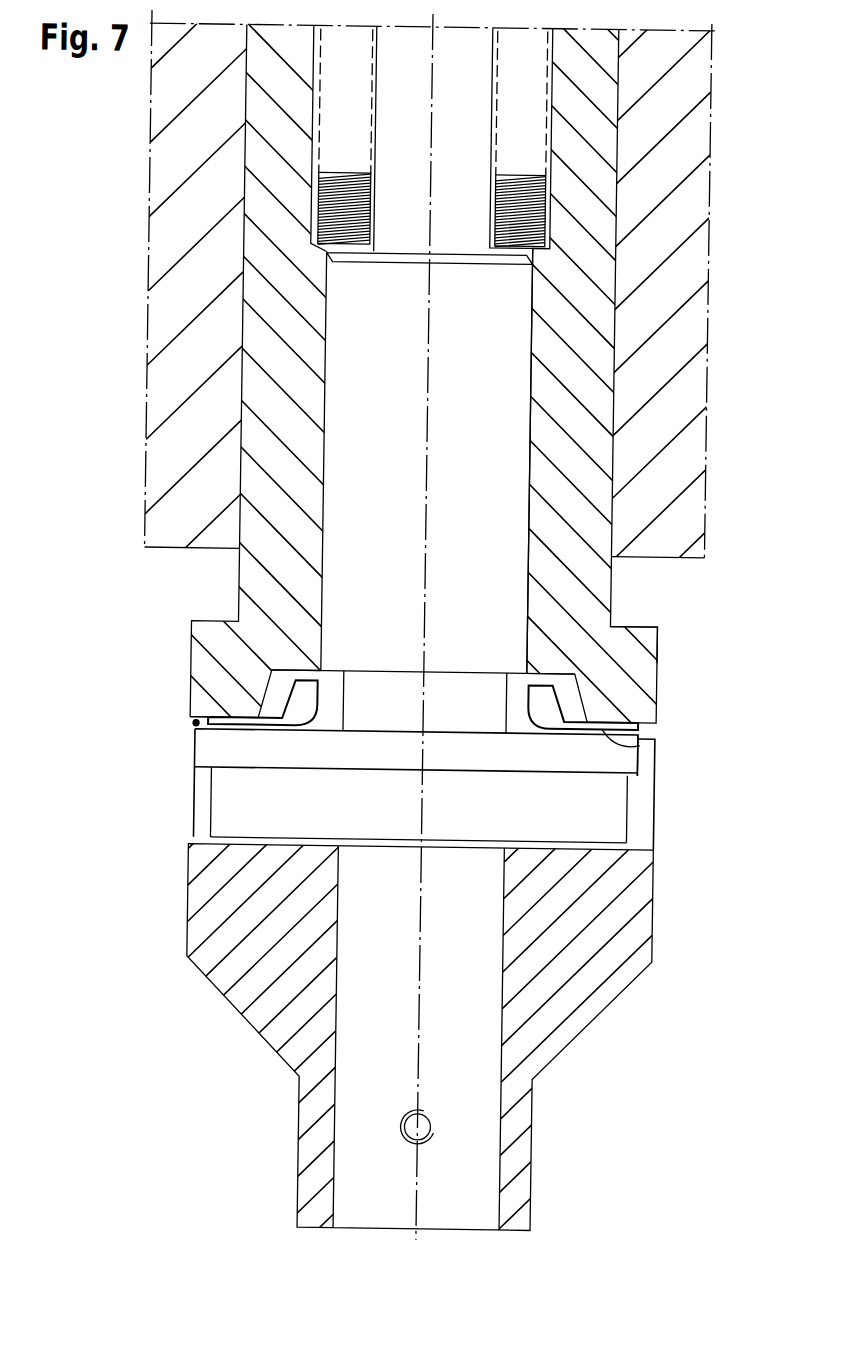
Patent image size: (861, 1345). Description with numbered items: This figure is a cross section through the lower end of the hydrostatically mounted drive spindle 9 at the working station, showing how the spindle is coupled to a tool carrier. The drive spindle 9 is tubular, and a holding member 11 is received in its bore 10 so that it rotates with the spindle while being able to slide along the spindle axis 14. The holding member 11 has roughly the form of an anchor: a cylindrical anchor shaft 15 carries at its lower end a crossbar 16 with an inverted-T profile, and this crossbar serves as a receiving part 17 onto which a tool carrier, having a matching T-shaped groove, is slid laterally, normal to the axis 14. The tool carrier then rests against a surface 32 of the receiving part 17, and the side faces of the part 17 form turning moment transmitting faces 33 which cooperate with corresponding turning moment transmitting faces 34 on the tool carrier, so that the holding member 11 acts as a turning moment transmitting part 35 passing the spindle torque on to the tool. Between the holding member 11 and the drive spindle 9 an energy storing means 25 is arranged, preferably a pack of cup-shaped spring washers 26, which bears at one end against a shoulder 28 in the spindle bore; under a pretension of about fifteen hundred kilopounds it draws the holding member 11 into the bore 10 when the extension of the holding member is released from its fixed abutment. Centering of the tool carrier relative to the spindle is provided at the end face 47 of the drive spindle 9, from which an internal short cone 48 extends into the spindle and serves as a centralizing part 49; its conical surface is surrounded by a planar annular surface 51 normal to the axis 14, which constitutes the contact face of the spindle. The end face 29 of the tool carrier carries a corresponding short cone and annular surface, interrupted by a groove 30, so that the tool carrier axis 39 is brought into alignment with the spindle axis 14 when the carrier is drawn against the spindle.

The drive spindle 9 is at (604, 310).
The bore 10 is at (328, 430).
The holding member 11 is at (497, 447).
The axis 14 is at (433, 340).
The cylindrical anchor shaft 15 is at (500, 518).
The crossbar 16 is at (304, 812).
The receiving part 17 is at (601, 801).
The energy storing means 25 is at (527, 133).
The pack of cup-shaped spring washers 26 is at (550, 211).
The shoulder 28 is at (316, 250).
The end face 29 is at (203, 746).
The groove 30 is at (205, 822).
The surface 32 is at (263, 770).
The turning moment transmitting faces 33 is at (561, 818).
The turning moment transmitting faces 34 is at (654, 787).
The turning moment transmitting part 35 is at (539, 378).
The tool carrier axis 39 is at (433, 968).
The end face 47 is at (198, 723).
The internal short cone 48 is at (279, 684).
The centralizing part 49 is at (596, 689).
The planar annular surface 51 is at (650, 743).